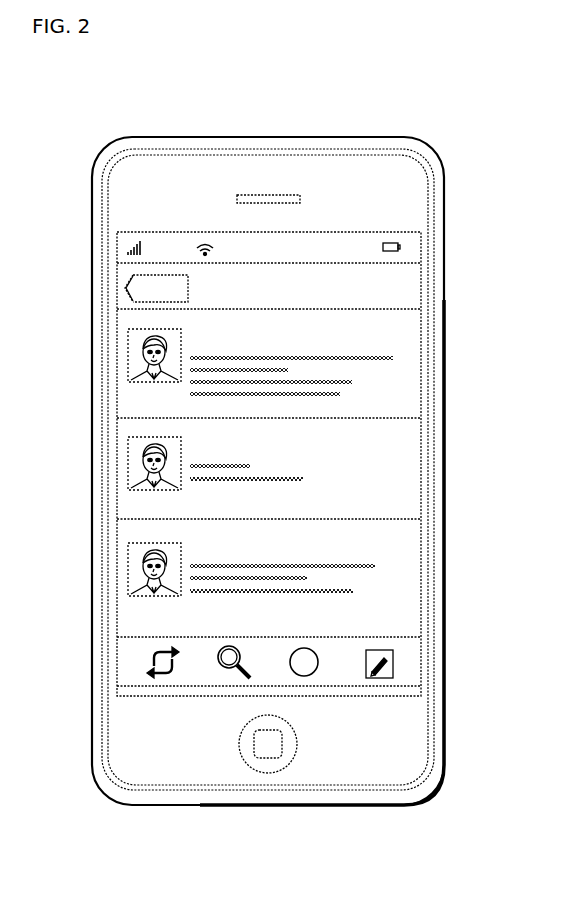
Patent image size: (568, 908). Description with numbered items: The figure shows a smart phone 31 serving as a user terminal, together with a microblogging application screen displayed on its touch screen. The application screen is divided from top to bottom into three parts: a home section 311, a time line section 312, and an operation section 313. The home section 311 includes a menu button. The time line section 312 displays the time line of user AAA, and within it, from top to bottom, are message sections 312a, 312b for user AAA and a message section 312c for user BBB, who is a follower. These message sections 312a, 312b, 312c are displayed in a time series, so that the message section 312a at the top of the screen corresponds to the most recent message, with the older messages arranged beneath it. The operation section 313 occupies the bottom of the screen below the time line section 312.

The smart phone 31 is at (194, 106).
The home section 311 is at (458, 242).
The time line section 312 is at (458, 633).
The message section 312a is at (87, 315).
The message section 312b is at (87, 420).
The message section 312c is at (87, 525).
The operation section 313 is at (458, 638).